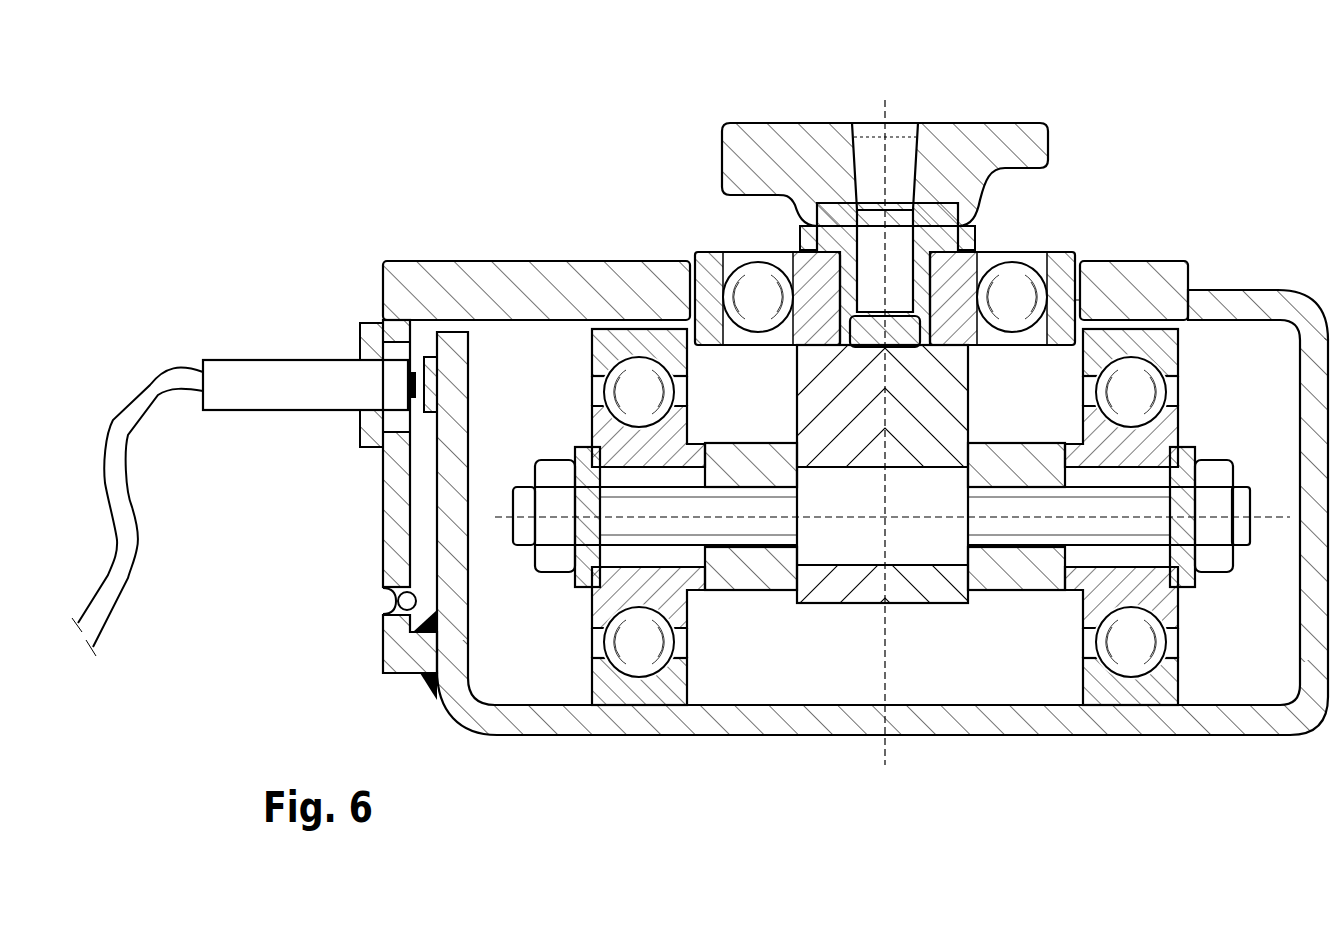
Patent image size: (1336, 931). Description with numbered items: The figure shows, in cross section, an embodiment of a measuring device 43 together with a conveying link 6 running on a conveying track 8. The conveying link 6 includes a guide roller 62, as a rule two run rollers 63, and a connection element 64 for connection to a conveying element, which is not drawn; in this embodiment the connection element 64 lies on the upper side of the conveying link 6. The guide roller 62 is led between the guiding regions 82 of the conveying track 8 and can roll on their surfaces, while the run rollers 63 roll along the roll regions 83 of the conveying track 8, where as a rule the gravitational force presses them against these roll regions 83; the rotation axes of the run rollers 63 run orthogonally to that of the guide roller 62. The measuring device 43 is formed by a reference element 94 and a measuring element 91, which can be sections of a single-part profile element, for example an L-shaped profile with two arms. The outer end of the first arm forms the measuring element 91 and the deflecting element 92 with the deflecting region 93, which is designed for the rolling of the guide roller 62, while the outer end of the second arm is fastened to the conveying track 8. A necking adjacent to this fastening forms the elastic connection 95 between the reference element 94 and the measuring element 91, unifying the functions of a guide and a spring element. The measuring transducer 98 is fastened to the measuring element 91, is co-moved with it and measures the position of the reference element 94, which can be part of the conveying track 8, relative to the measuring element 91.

The conveying link 6 is at (746, 110).
The conveying track 8 is at (738, 716).
The measuring device 43 is at (422, 130).
The guide roller 62 is at (728, 263).
The run roller 63 is at (667, 688).
The connection element 64 is at (970, 145).
The guiding region 82 is at (1075, 250).
The roll region 83 is at (575, 682).
The measuring element 91 is at (405, 283).
The deflecting element 92 is at (492, 278).
The deflecting region 93 is at (688, 290).
The reference element 94 is at (415, 665).
The connection 95 is at (372, 603).
The measuring transducer 98 is at (305, 398).